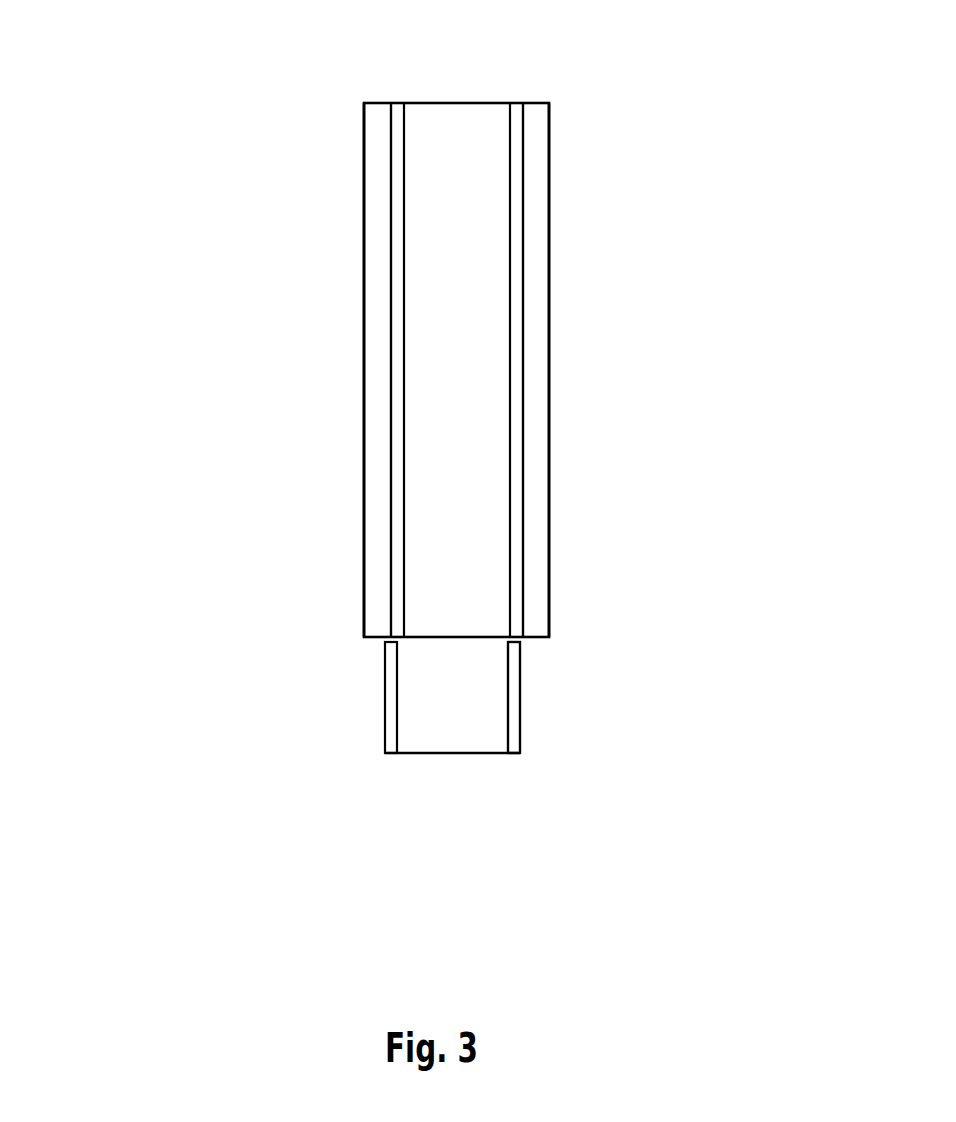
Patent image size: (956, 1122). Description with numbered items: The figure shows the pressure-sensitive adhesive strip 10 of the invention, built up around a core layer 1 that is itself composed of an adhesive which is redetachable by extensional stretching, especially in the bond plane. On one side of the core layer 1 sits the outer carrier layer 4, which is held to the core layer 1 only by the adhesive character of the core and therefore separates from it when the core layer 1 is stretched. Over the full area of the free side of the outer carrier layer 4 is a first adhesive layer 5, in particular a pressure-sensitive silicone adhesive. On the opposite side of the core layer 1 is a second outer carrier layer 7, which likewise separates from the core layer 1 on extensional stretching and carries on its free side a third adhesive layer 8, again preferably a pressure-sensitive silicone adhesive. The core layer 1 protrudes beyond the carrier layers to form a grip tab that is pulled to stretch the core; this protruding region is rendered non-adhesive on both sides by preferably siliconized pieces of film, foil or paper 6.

The pressure-sensitive adhesive strip 10 is at (232, 172).
The core layer 1 is at (466, 676).
The outer carrier layer 4 is at (398, 483).
The first adhesive layer 5 is at (378, 329).
The pieces of film, foil or paper 6 is at (517, 674).
The second outer carrier layer 7 is at (517, 267).
The third adhesive layer 8 is at (540, 370).